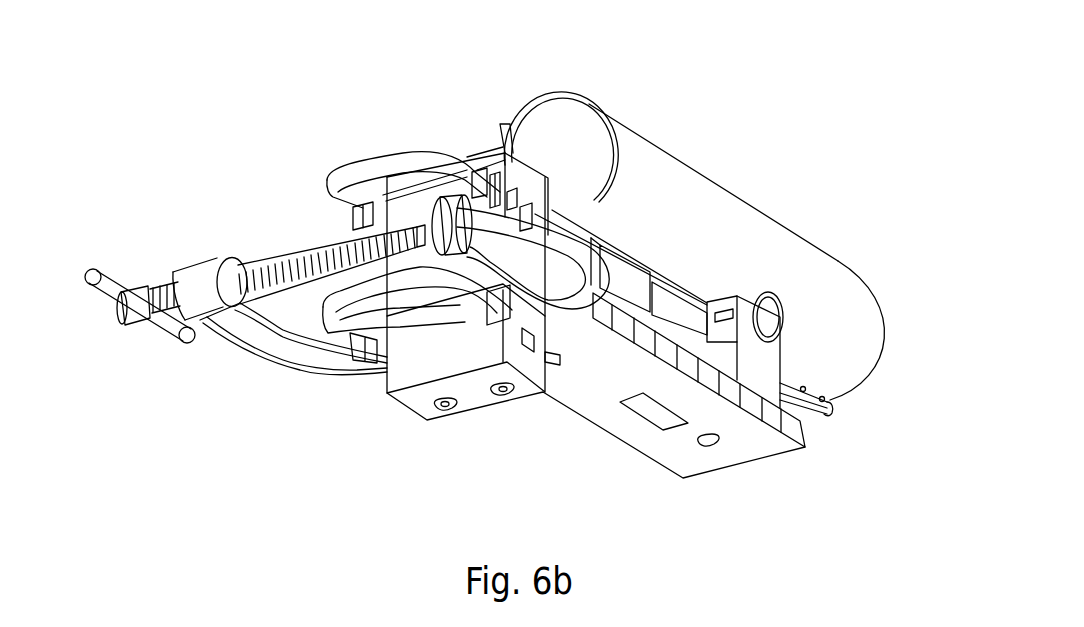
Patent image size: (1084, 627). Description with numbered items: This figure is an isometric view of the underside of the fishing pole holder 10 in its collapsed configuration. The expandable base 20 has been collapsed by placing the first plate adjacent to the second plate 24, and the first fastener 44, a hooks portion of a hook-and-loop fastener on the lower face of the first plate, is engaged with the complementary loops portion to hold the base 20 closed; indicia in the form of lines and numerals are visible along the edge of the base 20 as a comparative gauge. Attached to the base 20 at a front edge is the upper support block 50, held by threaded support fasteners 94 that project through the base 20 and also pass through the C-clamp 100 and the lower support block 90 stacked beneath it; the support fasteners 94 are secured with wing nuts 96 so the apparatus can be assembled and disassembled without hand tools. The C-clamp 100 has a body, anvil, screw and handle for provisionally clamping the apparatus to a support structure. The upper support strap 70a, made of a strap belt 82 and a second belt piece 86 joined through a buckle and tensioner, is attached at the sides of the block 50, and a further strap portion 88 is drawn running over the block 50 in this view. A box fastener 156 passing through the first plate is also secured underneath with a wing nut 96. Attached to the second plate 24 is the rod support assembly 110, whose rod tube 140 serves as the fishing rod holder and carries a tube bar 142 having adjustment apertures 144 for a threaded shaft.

The fishing pole holder 10 is at (818, 116).
The expandable base 20 is at (598, 452).
The second plate 24 is at (770, 443).
The first fastener 44 is at (643, 407).
The upper support block 50 is at (492, 133).
The upper support strap 70a is at (330, 172).
The strap belt 82 is at (530, 350).
The second belt piece 86 is at (383, 367).
The cross strap 88 is at (413, 162).
The lower support block 90 is at (338, 397).
The support fasteners 94 is at (510, 397).
The wing nuts 96 is at (432, 407).
The C-clamp 100 is at (245, 245).
The rod support assembly 110 is at (808, 243).
The rod tube 140 is at (708, 193).
The tube bar 142 is at (829, 405).
The adjustment apertures 144 is at (815, 412).
The box fastener 156 is at (557, 367).